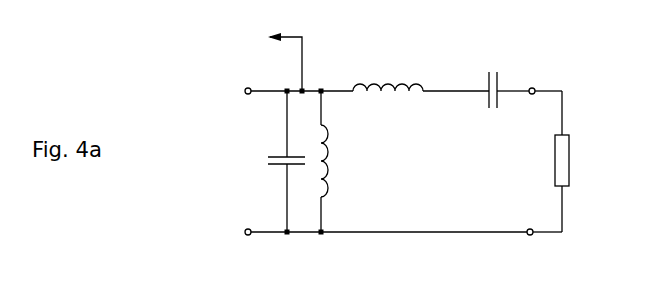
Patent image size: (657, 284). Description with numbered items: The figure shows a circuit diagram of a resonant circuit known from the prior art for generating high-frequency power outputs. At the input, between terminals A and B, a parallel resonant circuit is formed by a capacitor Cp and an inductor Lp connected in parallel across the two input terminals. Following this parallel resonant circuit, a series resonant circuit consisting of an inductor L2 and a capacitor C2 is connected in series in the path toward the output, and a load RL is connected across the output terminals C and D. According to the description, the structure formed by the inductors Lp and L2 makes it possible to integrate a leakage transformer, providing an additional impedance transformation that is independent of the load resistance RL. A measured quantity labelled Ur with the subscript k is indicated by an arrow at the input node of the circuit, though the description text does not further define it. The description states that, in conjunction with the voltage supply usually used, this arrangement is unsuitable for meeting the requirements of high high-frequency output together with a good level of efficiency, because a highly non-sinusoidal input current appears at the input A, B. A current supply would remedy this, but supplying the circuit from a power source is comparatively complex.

The input terminal A is at (232, 92).
The input terminal B is at (232, 234).
The output terminal C is at (532, 70).
The output terminal D is at (533, 251).
The voltage Urk measurement point Ur is at (271, 54).
The voltage Urk subscript k is at (249, 50).
The inductor L2 is at (388, 69).
The capacitor C2 is at (487, 79).
The load RL is at (576, 160).
The capacitor Cp is at (266, 161).
The inductor Lp is at (339, 161).